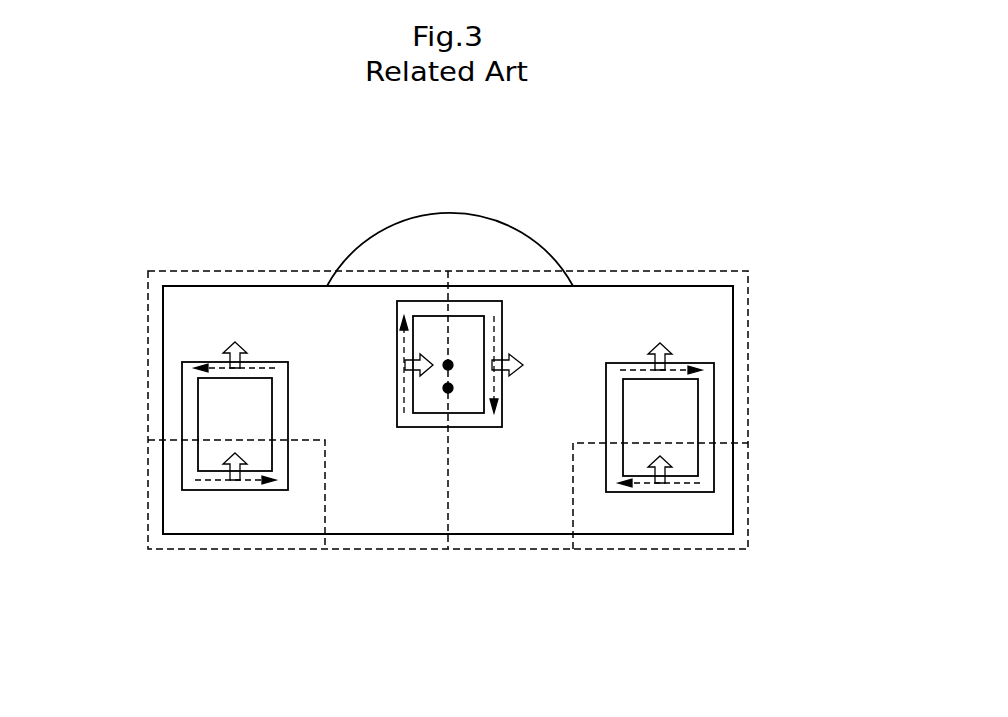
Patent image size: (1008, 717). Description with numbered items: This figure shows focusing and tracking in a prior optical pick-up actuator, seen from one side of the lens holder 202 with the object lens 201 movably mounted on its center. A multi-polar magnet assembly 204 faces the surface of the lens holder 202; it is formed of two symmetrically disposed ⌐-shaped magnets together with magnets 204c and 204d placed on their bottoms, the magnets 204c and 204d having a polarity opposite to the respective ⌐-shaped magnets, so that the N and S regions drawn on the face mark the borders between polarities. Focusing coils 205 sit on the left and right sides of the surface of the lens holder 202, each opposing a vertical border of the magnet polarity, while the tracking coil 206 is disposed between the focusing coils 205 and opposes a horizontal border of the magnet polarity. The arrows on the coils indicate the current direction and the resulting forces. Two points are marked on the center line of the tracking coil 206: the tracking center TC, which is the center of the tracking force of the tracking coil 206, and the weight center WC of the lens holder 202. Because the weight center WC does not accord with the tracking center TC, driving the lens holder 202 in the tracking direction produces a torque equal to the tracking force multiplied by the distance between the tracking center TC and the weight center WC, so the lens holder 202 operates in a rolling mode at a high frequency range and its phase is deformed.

The object lens 201 is at (462, 228).
The lens holder 202 is at (213, 285).
The multi-polar magnet assembly 204 is at (726, 271).
The magnet 204c is at (163, 503).
The magnet 204d is at (725, 514).
The focusing coil 205 is at (192, 417).
The tracking coil 206 is at (482, 305).
The tracking center TC is at (445, 370).
The weight center WC is at (452, 392).